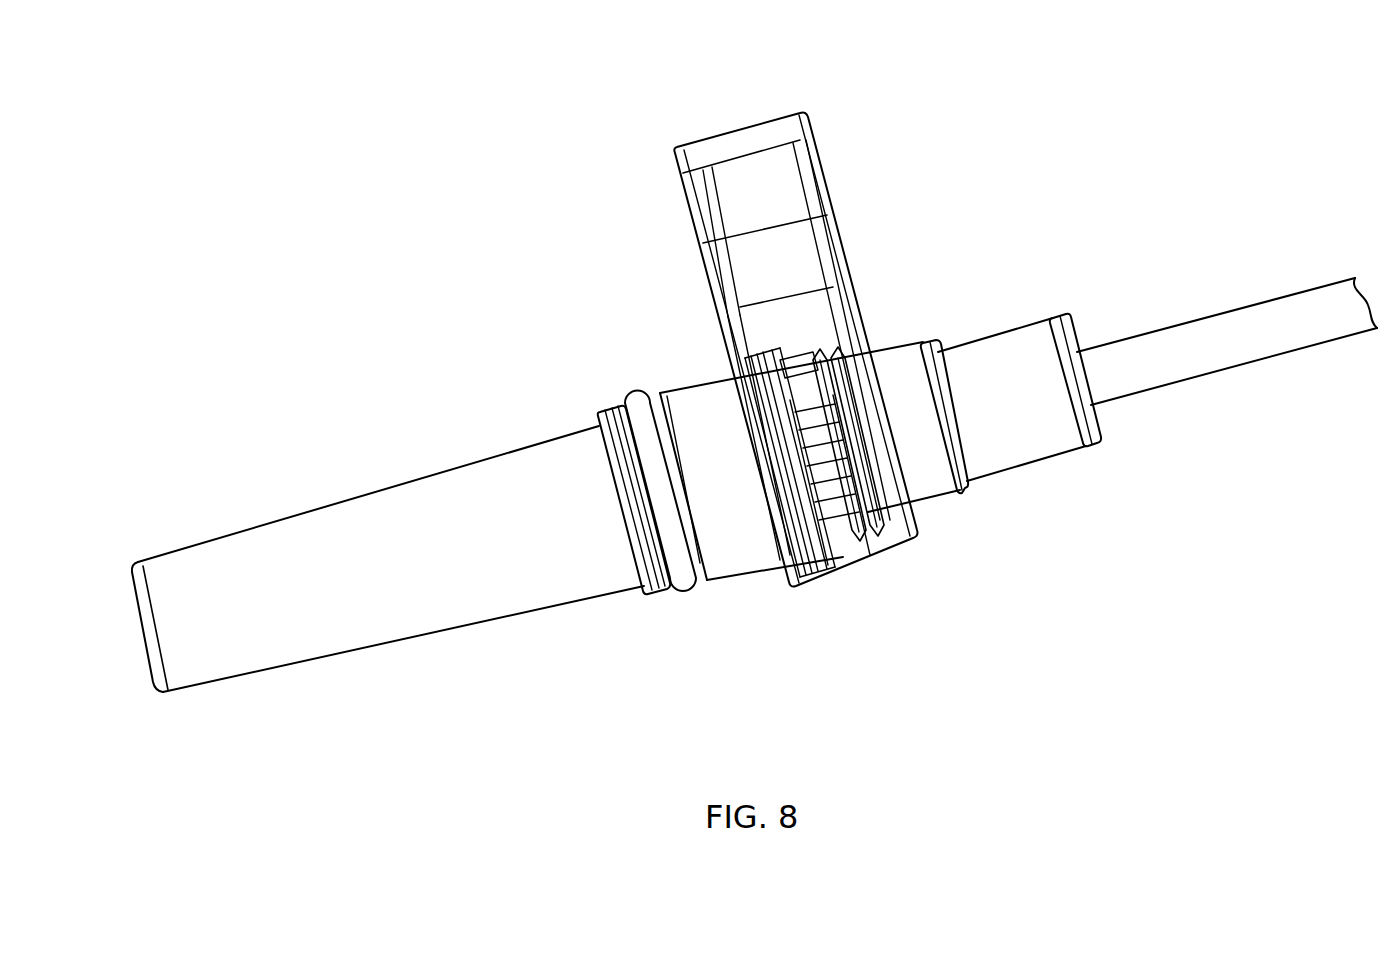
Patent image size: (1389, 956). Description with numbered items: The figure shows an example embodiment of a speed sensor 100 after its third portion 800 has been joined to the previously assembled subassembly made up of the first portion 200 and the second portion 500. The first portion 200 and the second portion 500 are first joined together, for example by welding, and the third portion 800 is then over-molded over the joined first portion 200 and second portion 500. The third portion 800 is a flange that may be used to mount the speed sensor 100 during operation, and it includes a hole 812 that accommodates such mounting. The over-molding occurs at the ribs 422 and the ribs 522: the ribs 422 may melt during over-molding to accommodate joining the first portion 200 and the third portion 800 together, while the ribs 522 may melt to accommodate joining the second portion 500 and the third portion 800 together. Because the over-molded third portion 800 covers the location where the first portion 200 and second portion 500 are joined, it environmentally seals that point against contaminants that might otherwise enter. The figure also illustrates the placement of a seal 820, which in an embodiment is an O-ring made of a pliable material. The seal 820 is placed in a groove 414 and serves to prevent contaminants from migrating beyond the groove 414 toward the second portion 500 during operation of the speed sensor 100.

The speed sensor 100 is at (244, 94).
The first portion 200 is at (415, 520).
The groove 414 is at (622, 410).
The second portion 500 is at (1016, 358).
The third portion 800 is at (704, 150).
The hole 812 is at (787, 196).
The seal 820 is at (687, 580).
The ribs 422 is at (833, 587).
The ribs 522 is at (882, 540).